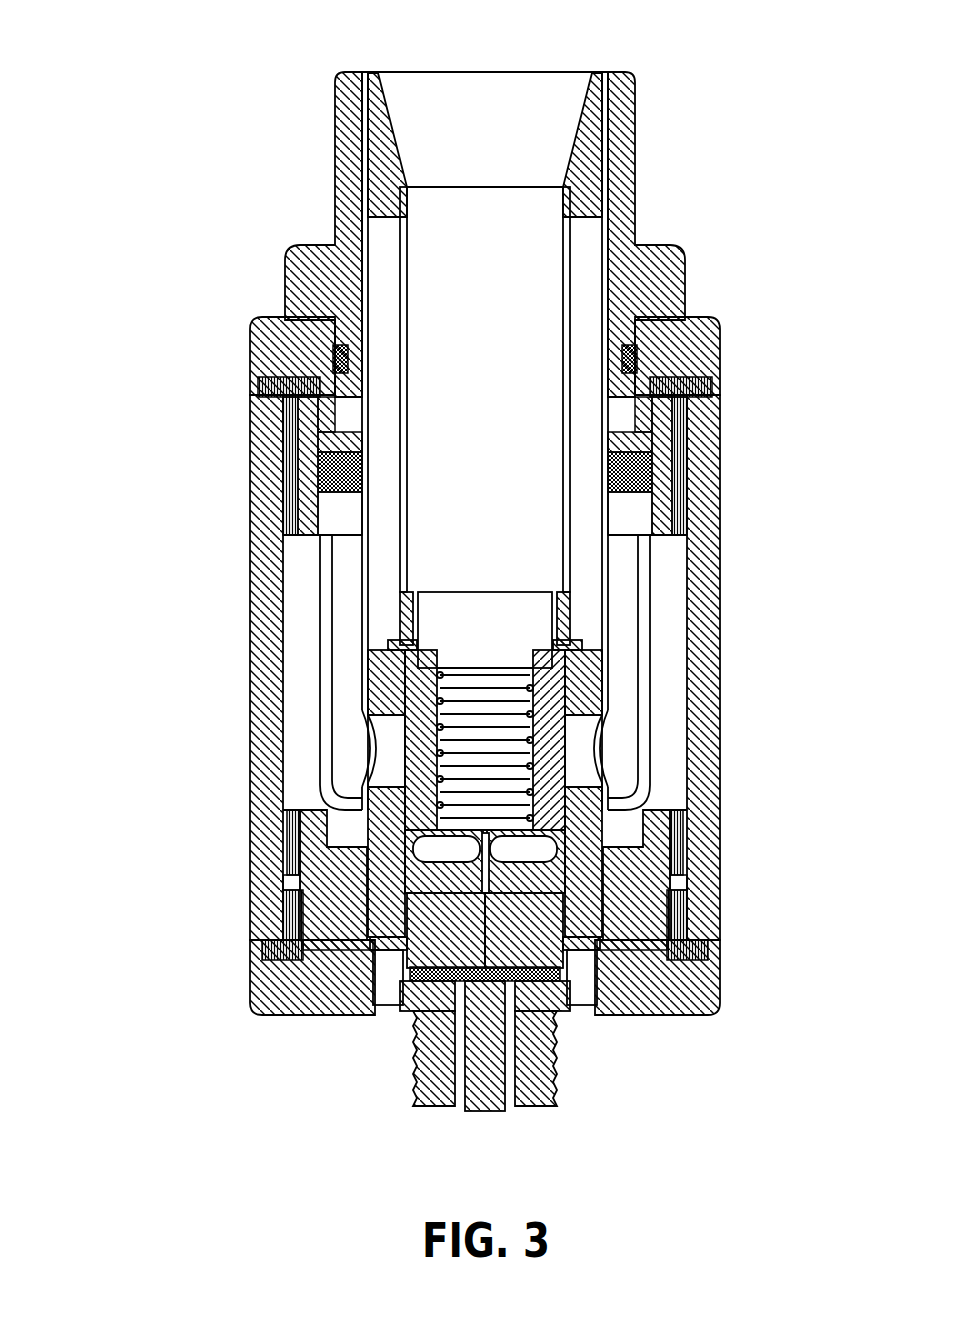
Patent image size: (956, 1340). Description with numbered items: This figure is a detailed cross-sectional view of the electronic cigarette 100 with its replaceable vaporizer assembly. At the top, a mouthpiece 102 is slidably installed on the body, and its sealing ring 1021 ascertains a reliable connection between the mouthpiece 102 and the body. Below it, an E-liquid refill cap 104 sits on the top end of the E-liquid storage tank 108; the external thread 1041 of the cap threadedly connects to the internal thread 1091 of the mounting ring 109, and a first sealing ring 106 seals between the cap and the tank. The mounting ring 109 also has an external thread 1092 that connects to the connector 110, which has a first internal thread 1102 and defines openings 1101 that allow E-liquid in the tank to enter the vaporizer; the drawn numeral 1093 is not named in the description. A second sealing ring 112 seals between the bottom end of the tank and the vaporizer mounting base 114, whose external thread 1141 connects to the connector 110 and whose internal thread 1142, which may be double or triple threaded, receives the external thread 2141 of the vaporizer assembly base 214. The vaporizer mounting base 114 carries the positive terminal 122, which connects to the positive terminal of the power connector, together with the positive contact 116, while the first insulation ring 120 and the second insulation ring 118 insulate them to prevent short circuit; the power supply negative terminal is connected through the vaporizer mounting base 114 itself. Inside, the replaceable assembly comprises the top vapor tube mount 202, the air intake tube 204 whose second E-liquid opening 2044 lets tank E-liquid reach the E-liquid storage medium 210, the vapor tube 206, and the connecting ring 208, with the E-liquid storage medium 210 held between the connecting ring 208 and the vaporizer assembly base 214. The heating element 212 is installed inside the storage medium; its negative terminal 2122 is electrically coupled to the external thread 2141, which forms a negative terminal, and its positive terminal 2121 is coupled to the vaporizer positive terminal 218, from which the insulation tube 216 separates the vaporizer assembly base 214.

The electronic cigarette 100 is at (103, 68).
The mouthpiece 102 is at (337, 135).
The sealing ring 1021 is at (320, 410).
The E-liquid refill cap 104 is at (255, 367).
The external thread 1041 is at (300, 395).
The first sealing ring 106 is at (285, 360).
The E-liquid storage tank 108 is at (302, 590).
The mounting ring 109 is at (300, 500).
The internal thread 1091 is at (300, 470).
The external thread 1092 is at (318, 472).
The liquid injection hole 1093 is at (307, 452).
The connector 110 is at (322, 668).
The openings 1101 is at (300, 520).
The first internal thread 1102 is at (285, 813).
The second sealing ring 112 is at (283, 930).
The vaporizer mounting base 114 is at (252, 978).
The external thread 1141 is at (290, 830).
The internal thread 1142 is at (378, 937).
The positive contact 116 is at (388, 968).
The second insulation ring 118 is at (415, 1005).
The first insulation ring 120 is at (413, 1098).
The positive terminal 122 is at (450, 1110).
The top vapor tube mount 202 is at (590, 118).
The air intake tube 204 is at (605, 240).
The second E-liquid opening 2044 is at (368, 748).
The vapor tube 206 is at (572, 300).
The connecting ring 208 is at (590, 635).
The E-liquid storage medium 210 is at (560, 690).
The heating element 212 is at (530, 770).
The positive terminal 2121 is at (510, 845).
The negative terminal 2122 is at (583, 668).
The vaporizer assembly base 214 is at (590, 930).
The external thread 2141 is at (575, 940).
The insulation tube 216 is at (620, 950).
The vaporizer positive terminal 218 is at (520, 975).